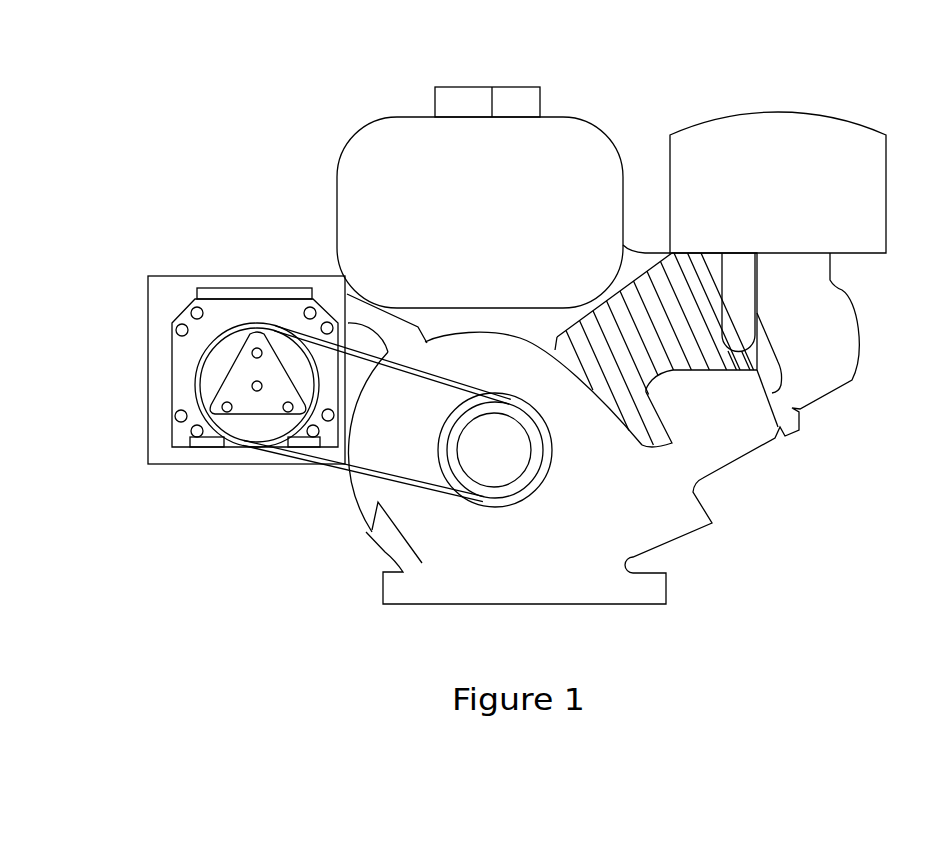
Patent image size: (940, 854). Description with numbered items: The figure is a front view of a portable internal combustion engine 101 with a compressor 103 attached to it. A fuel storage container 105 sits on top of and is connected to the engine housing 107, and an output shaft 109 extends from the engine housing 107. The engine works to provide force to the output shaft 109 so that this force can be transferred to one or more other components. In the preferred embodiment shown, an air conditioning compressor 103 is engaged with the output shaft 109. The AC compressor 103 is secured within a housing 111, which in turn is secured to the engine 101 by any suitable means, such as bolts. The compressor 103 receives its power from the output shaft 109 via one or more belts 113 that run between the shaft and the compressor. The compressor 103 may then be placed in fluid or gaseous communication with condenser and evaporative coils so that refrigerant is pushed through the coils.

The portable internal combustion engine 101 is at (279, 111).
The compressor 103 is at (164, 291).
The fuel storage container 105 is at (600, 115).
The engine housing 107 is at (695, 532).
The output shaft 109 is at (460, 472).
The housing 111 is at (148, 408).
The belts 113 is at (327, 467).